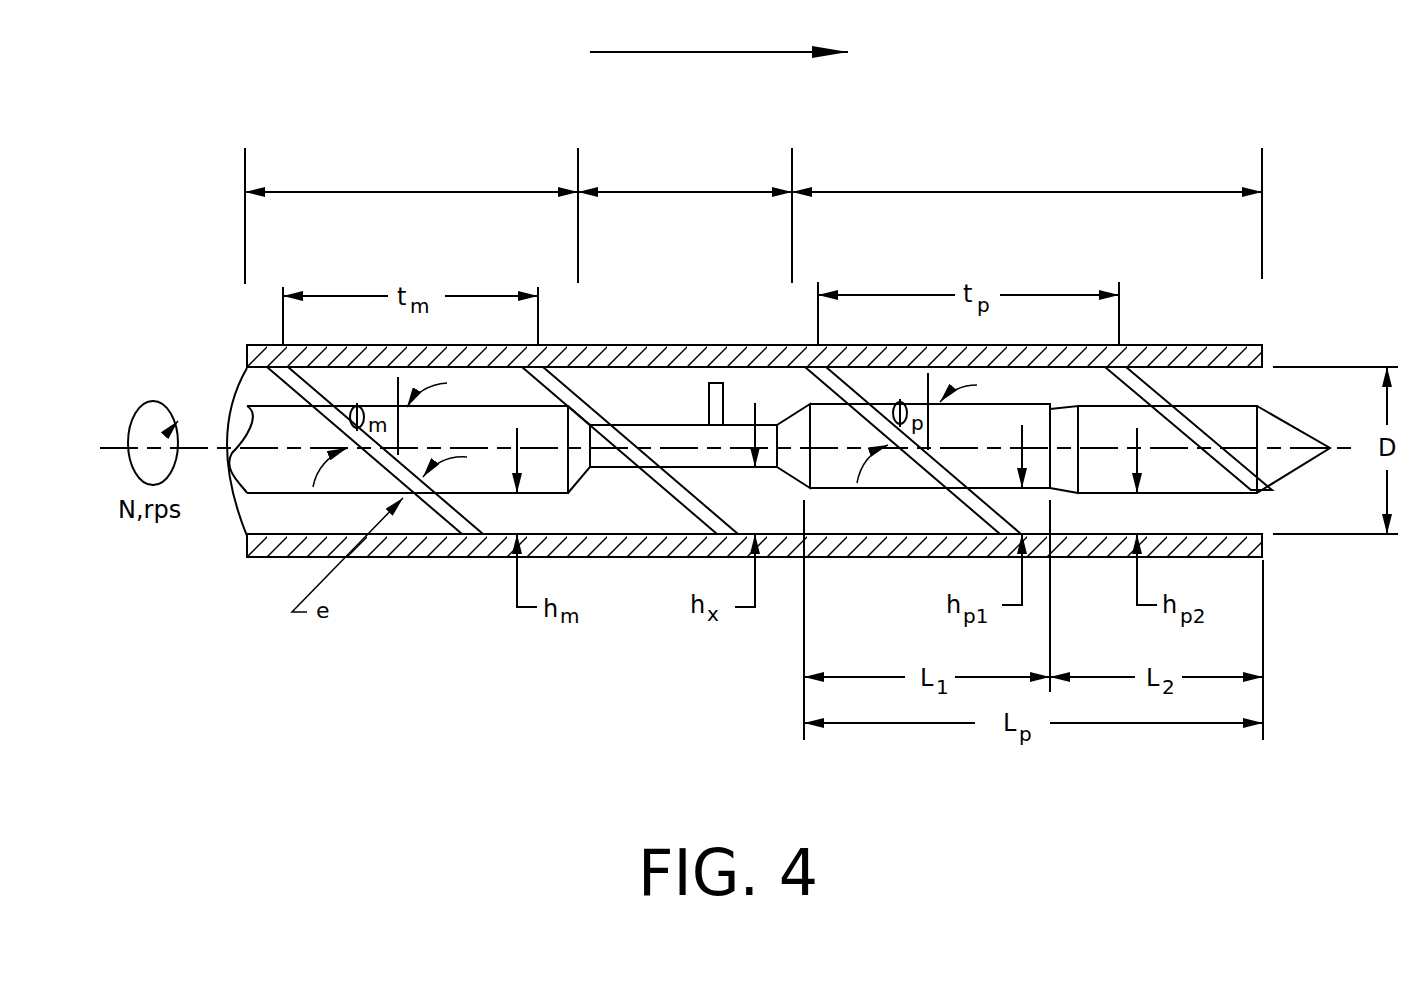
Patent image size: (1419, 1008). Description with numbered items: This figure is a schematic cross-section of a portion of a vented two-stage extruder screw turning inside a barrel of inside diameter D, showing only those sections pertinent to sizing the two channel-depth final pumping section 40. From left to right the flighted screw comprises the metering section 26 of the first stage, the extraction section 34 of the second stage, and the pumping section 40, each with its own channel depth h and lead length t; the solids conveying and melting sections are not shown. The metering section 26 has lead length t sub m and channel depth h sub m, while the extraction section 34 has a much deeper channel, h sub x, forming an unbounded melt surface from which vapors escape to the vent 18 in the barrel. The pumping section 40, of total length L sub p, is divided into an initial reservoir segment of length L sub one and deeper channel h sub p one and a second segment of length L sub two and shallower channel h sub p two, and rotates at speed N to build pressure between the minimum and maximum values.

The vent 18 is at (708, 392).
The metering section 26 is at (400, 191).
The extraction section 34 is at (673, 191).
The final pumping-section 40 is at (1003, 191).